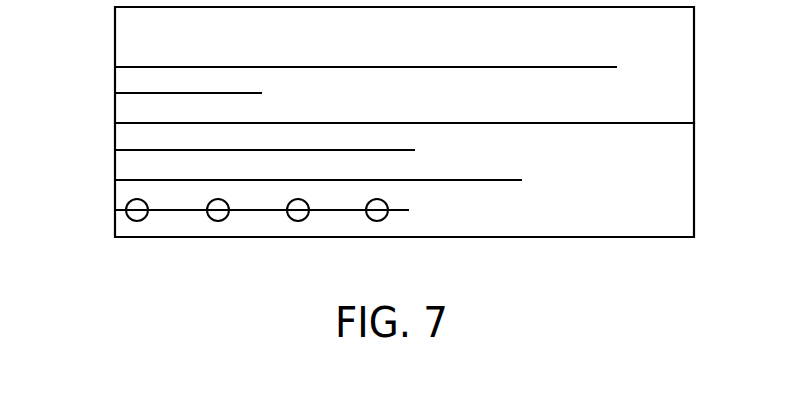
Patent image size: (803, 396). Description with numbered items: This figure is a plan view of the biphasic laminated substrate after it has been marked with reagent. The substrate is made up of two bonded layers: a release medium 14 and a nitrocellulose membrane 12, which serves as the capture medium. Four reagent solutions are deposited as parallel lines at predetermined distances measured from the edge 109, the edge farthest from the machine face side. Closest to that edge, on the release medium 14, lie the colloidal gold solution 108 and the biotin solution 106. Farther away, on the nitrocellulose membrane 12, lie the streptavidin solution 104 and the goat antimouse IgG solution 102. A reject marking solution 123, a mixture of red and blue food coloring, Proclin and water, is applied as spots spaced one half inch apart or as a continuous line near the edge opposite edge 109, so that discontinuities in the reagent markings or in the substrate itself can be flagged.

The release medium 14 is at (694, 62).
The nitrocellulose membrane 12 is at (694, 183).
The goat antimouse IgG solution 102 is at (115, 66).
The streptavidin solution 104 is at (116, 94).
The biotin solution 106 is at (115, 149).
The colloidal gold solution 108 is at (116, 181).
The reject marking solution 123 is at (404, 211).
The edge 109 is at (543, 238).